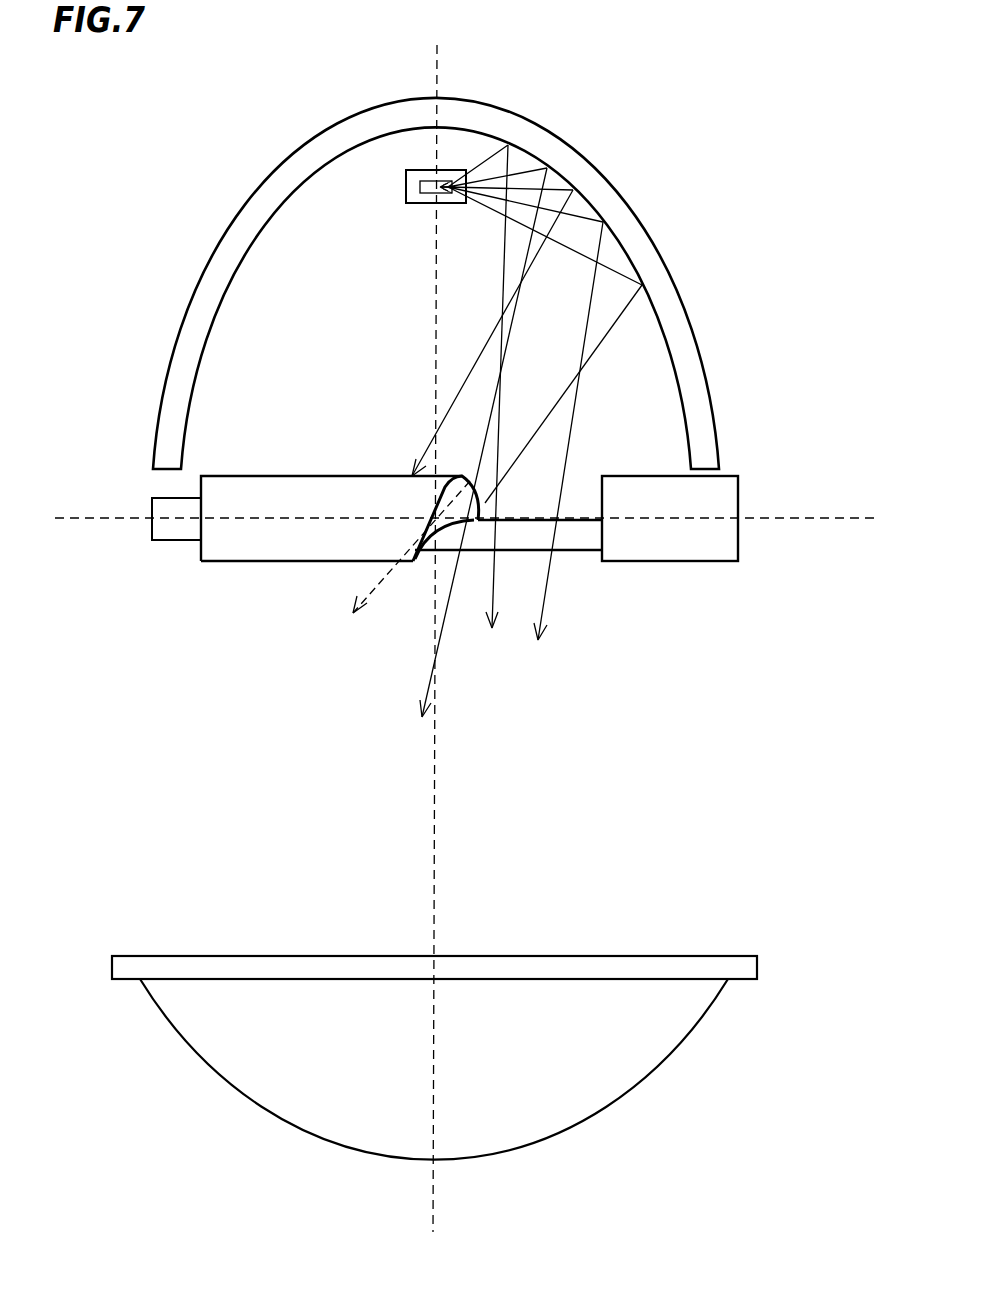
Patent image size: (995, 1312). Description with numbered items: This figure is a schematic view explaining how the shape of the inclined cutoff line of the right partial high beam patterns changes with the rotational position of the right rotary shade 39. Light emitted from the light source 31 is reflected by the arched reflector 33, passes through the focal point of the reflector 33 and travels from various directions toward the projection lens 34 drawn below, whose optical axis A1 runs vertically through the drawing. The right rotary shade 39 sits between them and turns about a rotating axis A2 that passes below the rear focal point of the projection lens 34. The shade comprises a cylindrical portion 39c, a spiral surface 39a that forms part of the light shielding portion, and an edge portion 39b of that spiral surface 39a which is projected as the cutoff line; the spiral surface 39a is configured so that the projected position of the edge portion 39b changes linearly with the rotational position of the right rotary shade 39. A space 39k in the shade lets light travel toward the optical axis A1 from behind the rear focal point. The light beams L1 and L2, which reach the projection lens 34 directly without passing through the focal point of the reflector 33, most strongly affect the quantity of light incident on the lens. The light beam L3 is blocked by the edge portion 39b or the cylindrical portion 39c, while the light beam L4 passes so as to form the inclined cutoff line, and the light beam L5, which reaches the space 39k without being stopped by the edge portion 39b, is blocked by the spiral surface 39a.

The light source 31 is at (406, 185).
The reflector 33 is at (503, 107).
The projection lens 34 is at (672, 1055).
The right rotary shade 39 is at (437, 553).
The spiral surface 39a is at (448, 538).
The edge portion 39b is at (477, 500).
The cylindrical portion 39c is at (304, 476).
The space 39k is at (523, 528).
The optical axis A1 is at (435, 1200).
The rotating axis A2 is at (840, 518).
The light beam L1 is at (546, 592).
The light beam L2 is at (487, 596).
The light beam L3 is at (460, 392).
The light beam L4 is at (430, 689).
The light beam L5 is at (371, 588).